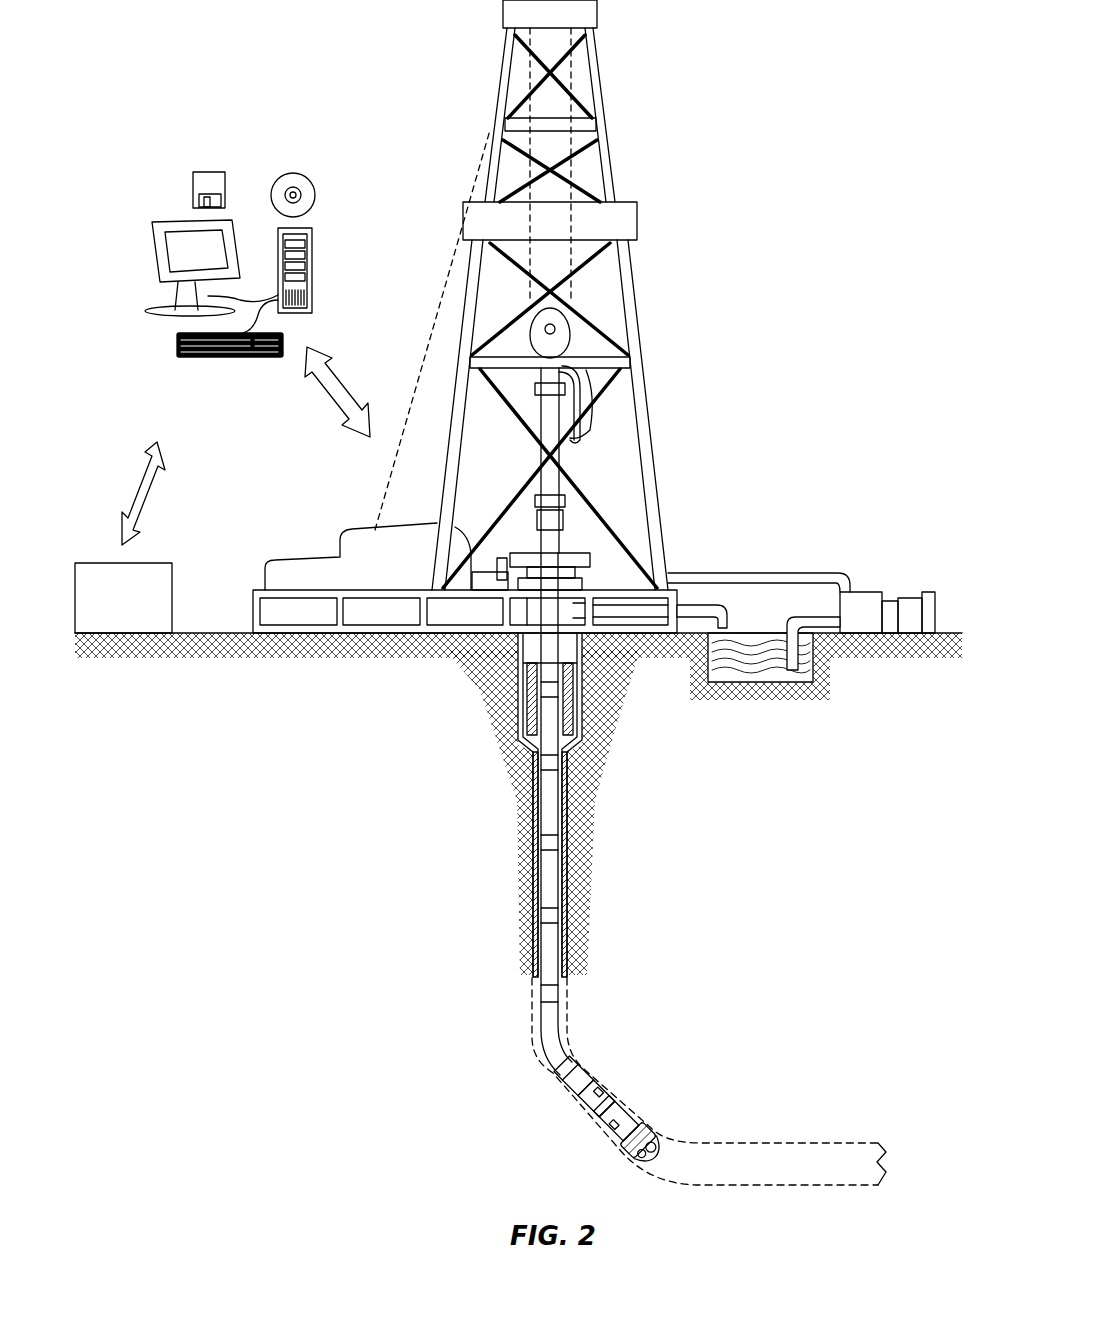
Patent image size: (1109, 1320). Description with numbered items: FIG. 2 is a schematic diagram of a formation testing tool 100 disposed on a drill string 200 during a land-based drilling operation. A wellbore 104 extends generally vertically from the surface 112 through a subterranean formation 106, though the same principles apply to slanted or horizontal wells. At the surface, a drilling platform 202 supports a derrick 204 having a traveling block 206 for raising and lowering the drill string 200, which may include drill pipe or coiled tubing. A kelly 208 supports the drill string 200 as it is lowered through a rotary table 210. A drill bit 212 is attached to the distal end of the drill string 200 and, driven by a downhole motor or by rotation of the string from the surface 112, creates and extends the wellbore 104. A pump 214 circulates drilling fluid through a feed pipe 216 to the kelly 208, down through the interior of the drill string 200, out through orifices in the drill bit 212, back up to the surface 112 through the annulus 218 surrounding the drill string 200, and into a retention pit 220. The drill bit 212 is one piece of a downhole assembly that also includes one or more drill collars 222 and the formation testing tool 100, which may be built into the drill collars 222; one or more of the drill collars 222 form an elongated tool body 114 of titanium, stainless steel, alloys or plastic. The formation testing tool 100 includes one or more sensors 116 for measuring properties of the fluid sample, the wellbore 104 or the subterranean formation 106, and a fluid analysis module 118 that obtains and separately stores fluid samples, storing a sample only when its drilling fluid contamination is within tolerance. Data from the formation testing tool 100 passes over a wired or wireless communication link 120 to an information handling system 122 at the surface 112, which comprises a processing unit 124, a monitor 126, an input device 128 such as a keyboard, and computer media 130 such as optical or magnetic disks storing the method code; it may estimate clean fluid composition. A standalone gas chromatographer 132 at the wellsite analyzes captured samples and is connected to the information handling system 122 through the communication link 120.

The formation testing tool 100 is at (600, 1092).
The wellbore 104 is at (568, 838).
The subterranean formation 106 is at (810, 927).
The surface 112 is at (950, 632).
The tool body 114 is at (574, 1076).
The sensors 116 is at (616, 1118).
The fluid analysis module 118 is at (596, 1098).
The communication link 120 is at (320, 398).
The information handling system 122 is at (228, 270).
The processing unit 124 is at (312, 241).
The monitor 126 is at (158, 260).
The input device 128 is at (185, 360).
The computer media 130 is at (291, 172).
The gas chromatographer 132 is at (148, 617).
The drill string 200 is at (560, 822).
The drilling platform 202 is at (253, 612).
The derrick 204 is at (612, 146).
The traveling block 206 is at (575, 335).
The kelly 208 is at (555, 415).
The rotary table 210 is at (590, 553).
The drill bit 212 is at (680, 1110).
The pump 214 is at (866, 592).
The feed pipe 216 is at (792, 573).
The annulus 218 is at (532, 838).
The retention pit 220 is at (757, 665).
The drill collars 222 is at (619, 1121).